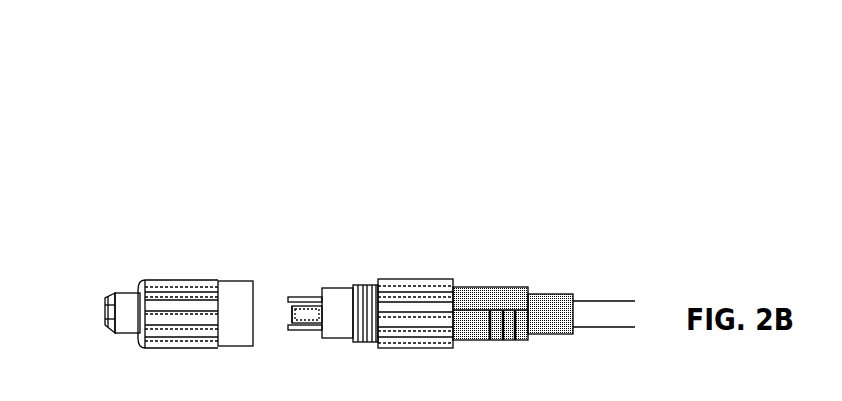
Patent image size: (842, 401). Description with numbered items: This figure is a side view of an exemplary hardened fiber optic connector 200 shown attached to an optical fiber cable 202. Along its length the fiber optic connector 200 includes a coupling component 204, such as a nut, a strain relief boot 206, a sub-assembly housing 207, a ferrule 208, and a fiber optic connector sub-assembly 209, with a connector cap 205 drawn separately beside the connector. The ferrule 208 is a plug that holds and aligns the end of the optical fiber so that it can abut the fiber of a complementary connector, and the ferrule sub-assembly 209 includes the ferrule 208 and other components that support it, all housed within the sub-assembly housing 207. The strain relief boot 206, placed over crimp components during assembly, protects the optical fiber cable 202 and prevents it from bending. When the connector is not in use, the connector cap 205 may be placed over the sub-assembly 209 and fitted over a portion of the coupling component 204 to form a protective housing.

The fiber optic connector 200 is at (408, 74).
The optical fiber cable 202 is at (608, 312).
The coupling component 204 is at (450, 276).
The connector cap 205 is at (113, 277).
The strain relief boot 206 is at (457, 277).
The sub-assembly housing 207 is at (352, 287).
The ferrule 208 is at (308, 315).
The fiber optic connector sub-assembly 209 is at (292, 310).